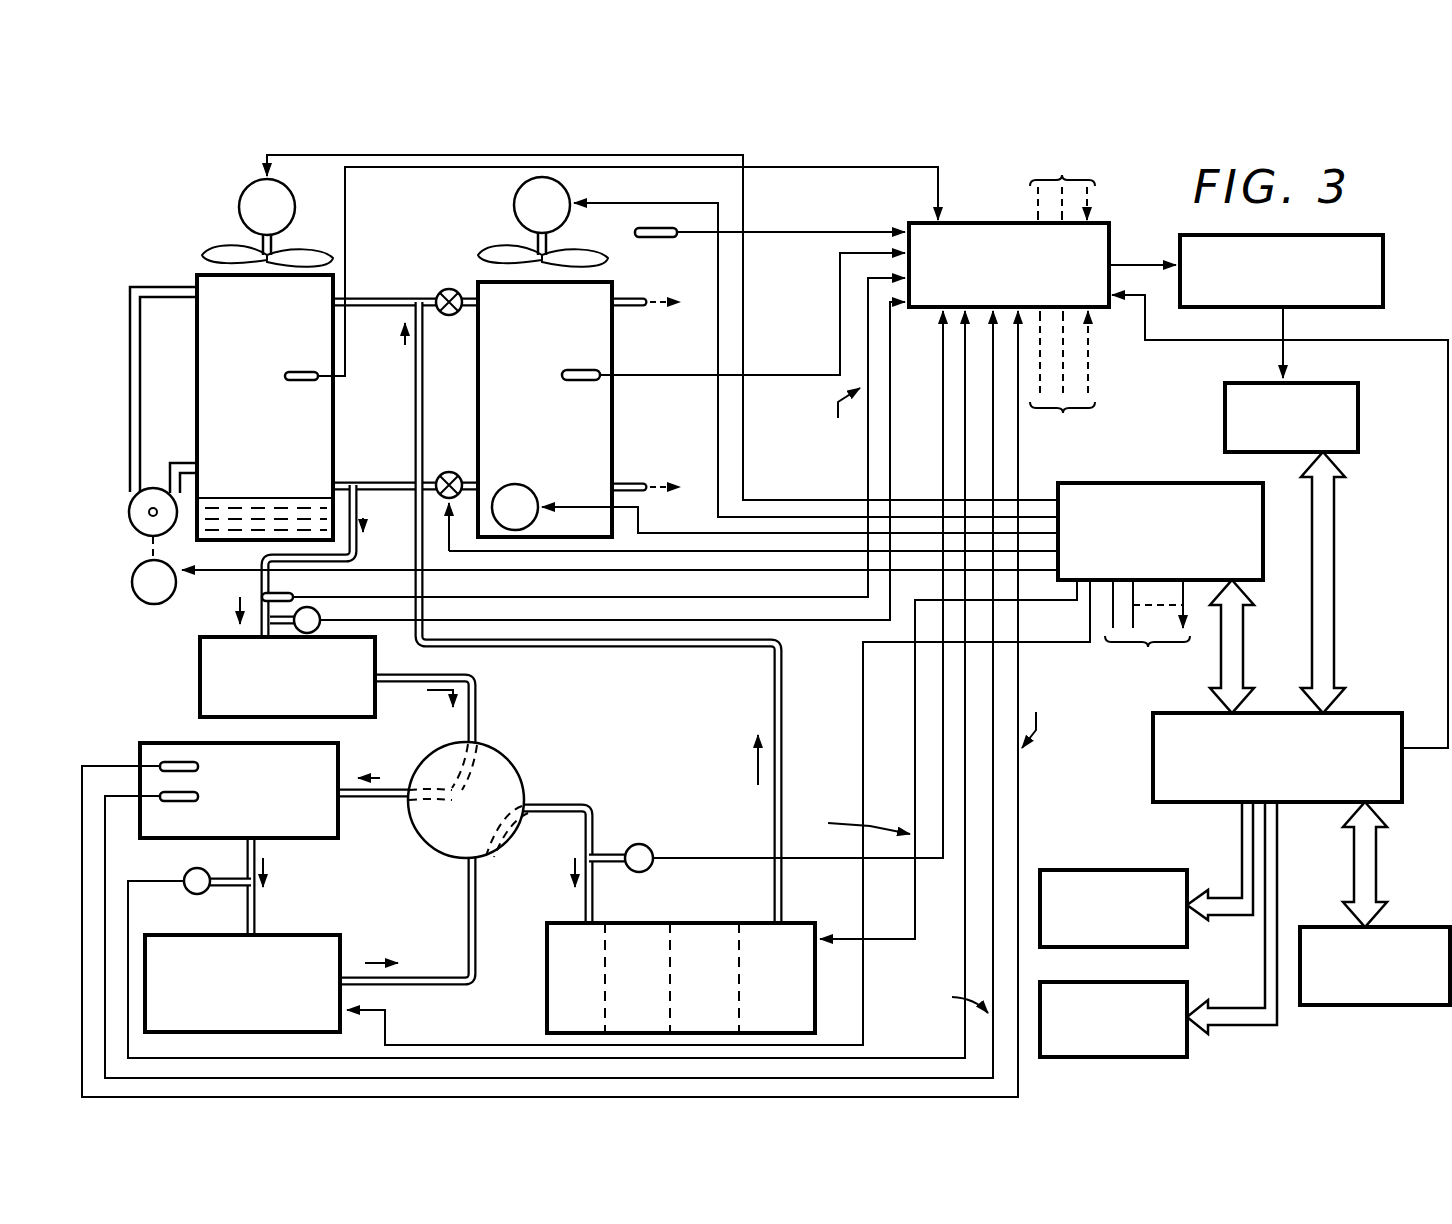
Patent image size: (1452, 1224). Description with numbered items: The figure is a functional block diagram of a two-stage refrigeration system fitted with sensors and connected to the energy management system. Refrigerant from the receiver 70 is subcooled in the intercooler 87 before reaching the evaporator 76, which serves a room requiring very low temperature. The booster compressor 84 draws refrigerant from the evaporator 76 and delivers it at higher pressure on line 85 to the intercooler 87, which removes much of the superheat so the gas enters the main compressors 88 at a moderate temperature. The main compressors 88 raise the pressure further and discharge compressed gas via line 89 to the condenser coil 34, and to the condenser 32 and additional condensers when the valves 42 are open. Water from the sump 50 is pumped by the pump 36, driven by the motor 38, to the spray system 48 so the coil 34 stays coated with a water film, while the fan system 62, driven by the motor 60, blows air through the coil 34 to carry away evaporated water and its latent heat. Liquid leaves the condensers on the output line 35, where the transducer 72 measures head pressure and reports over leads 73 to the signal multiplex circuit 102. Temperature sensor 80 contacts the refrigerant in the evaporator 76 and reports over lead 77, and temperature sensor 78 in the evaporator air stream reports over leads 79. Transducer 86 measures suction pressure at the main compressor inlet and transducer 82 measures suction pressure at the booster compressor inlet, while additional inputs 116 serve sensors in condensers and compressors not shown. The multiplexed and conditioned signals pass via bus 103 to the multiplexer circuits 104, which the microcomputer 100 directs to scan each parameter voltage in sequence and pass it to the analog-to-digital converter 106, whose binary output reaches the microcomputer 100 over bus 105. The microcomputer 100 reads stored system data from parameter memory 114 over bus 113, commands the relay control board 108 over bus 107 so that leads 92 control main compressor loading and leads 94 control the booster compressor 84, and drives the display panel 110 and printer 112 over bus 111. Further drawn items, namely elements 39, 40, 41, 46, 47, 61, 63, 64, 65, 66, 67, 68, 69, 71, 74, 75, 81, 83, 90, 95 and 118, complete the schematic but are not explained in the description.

The condenser 32 is at (172, 247).
The condenser coil 34 is at (230, 382).
The output line 35 is at (360, 498).
The pump 36 is at (128, 512).
The motor 38 is at (132, 584).
The pump motor control line 39 is at (228, 572).
The condenser pump motor 40 is at (535, 496).
The pump motor control line 41 is at (566, 507).
The valves 42 is at (440, 290).
The wet bulb temperature sensor 46 is at (305, 382).
The sensor lead 47 is at (346, 216).
The spray system 48 is at (228, 310).
The sump 50 is at (230, 540).
The motor 60 is at (240, 202).
The fan motor control line 61 is at (743, 346).
The fan system 62 is at (250, 254).
The fan motor control line 63 is at (718, 260).
The fan motor 64 is at (516, 203).
The fan 65 is at (516, 248).
The wet bulb temperature sensor 66 is at (583, 382).
The sensor lead 67 is at (798, 378).
The dry bulb temperature sensor 68 is at (648, 238).
The sensor lead 69 is at (800, 234).
The receiver 70 is at (200, 675).
The liquid line 71 is at (478, 720).
The pressure transducer 72 is at (317, 623).
The leads 73 is at (848, 622).
The condensing temperature sensor 74 is at (284, 592).
The sensor lead 75 is at (456, 598).
The evaporator 76 is at (150, 742).
The lead 77 is at (992, 855).
The temperature sensor 78 is at (200, 766).
The leads 79 is at (1020, 815).
The temperature sensor 80 is at (200, 796).
The suction line 81 is at (258, 850).
The pressure transducer 82 is at (192, 893).
The sensor lead 83 is at (965, 926).
The booster compressor 84 is at (278, 935).
The line 85 is at (466, 882).
The pressure transducer 86 is at (644, 844).
The intercooler 87 is at (516, 768).
The main compressor 88 is at (642, 923).
The line 89 is at (414, 420).
The outlet to additional condensers 90 is at (636, 308).
The leads 92 is at (914, 726).
The leads 94 is at (862, 726).
The sensor lead 95 is at (850, 858).
The microcomputer 100 is at (1153, 752).
The signal multiplex circuit 102 is at (1112, 250).
The bus 103 is at (1130, 266).
The multiplexer circuits 104 is at (1383, 290).
The bus 105 is at (1335, 565).
The analog-to-digital converter 106 is at (1358, 437).
The bus 107 is at (1243, 670).
The relay control board 108 is at (1122, 483).
The display panel 110 is at (1052, 870).
The bus 111 is at (1242, 820).
The printer 112 is at (1125, 1057).
The bus 113 is at (1378, 884).
The parameter memory 114 is at (1385, 1005).
The additional inputs 116 is at (1062, 299).
The additional relay outputs 118 is at (1147, 627).